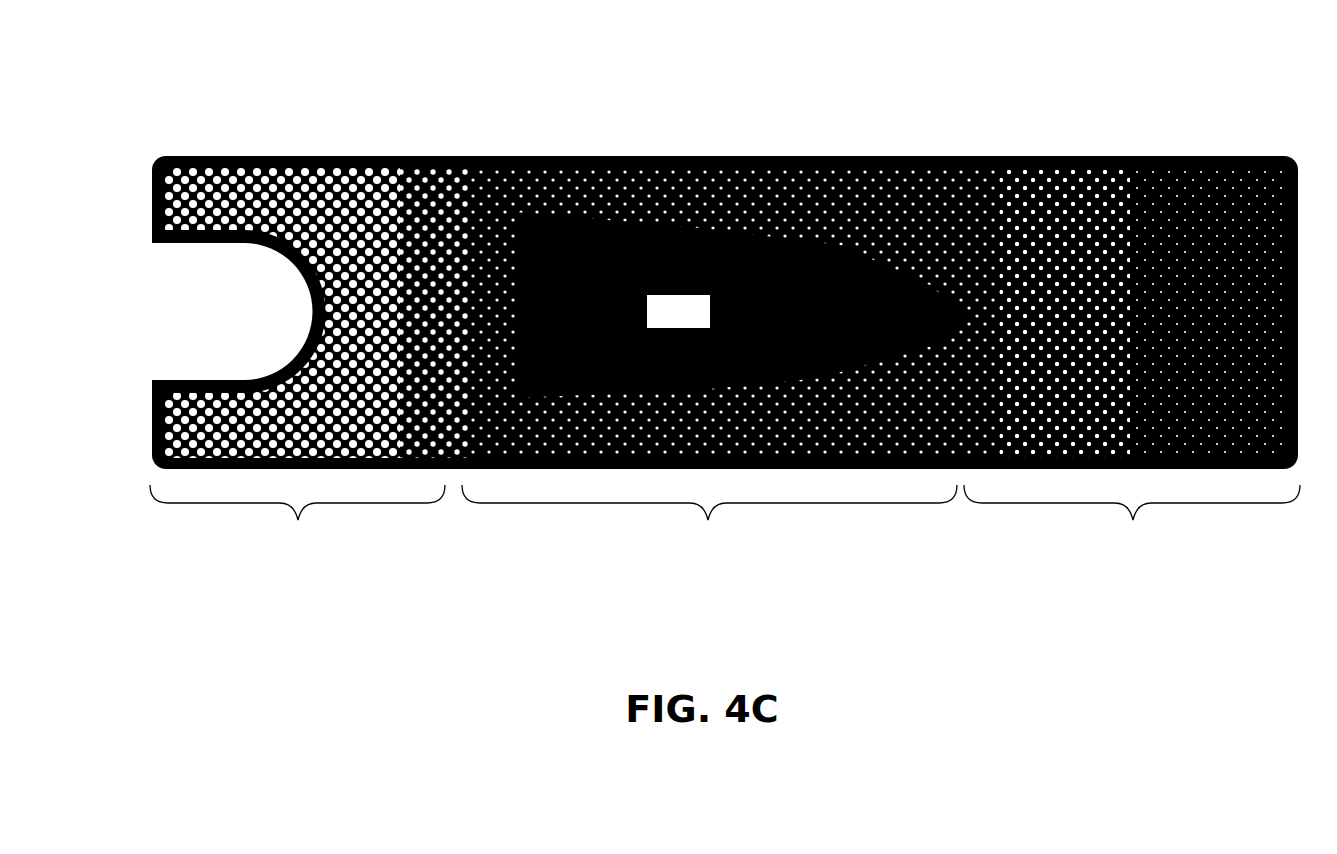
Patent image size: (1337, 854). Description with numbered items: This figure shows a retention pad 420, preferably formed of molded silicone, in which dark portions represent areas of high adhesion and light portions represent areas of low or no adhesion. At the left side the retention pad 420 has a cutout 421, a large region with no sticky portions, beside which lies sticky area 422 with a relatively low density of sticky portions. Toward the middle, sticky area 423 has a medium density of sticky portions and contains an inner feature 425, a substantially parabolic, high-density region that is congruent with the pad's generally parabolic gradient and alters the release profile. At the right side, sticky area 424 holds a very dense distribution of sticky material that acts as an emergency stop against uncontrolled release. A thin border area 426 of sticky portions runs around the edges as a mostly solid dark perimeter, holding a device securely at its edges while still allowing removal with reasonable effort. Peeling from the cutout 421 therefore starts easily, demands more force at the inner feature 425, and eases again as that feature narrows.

The retention pad 420 is at (352, 653).
The cutout 421 is at (226, 311).
The sticky area 422 is at (297, 523).
The sticky area 423 is at (709, 523).
The sticky area 424 is at (1132, 521).
The inner feature 425 is at (678, 311).
The border area 426 is at (724, 156).